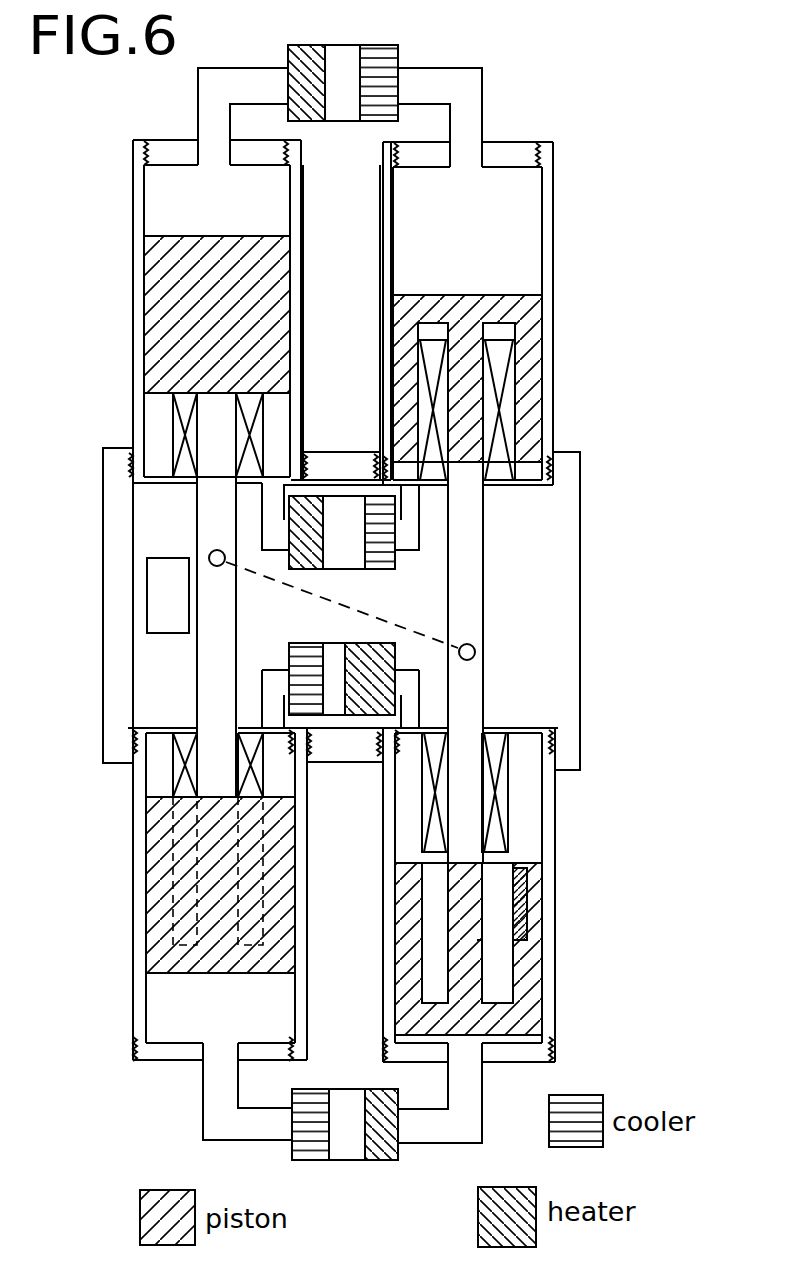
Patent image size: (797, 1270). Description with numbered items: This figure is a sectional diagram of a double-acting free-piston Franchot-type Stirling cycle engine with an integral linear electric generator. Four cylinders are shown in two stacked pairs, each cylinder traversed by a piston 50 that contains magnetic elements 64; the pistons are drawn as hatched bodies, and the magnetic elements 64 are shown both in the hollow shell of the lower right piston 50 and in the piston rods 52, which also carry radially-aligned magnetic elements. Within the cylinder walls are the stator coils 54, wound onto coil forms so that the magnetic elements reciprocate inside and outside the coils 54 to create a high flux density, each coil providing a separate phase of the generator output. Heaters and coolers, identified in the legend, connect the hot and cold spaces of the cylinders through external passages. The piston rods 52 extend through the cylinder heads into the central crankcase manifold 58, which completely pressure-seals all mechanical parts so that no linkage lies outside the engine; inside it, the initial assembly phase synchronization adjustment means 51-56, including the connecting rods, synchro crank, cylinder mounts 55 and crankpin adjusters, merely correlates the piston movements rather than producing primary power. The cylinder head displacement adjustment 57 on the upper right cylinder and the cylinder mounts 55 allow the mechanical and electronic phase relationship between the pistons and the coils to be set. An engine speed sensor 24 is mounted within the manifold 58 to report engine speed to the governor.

The engine speed sensor 24 is at (164, 626).
The piston 50 is at (142, 274).
The initial assembly phase synchronization adjustment means 51-56 is at (514, 660).
The piston rod 52 is at (512, 556).
The stator coil 54 is at (510, 800).
The cylinder mount 55 is at (556, 466).
The cylinder head displacement adjustment 57 is at (552, 152).
The crankcase manifold 58 is at (102, 540).
The magnetic element 64 is at (536, 919).